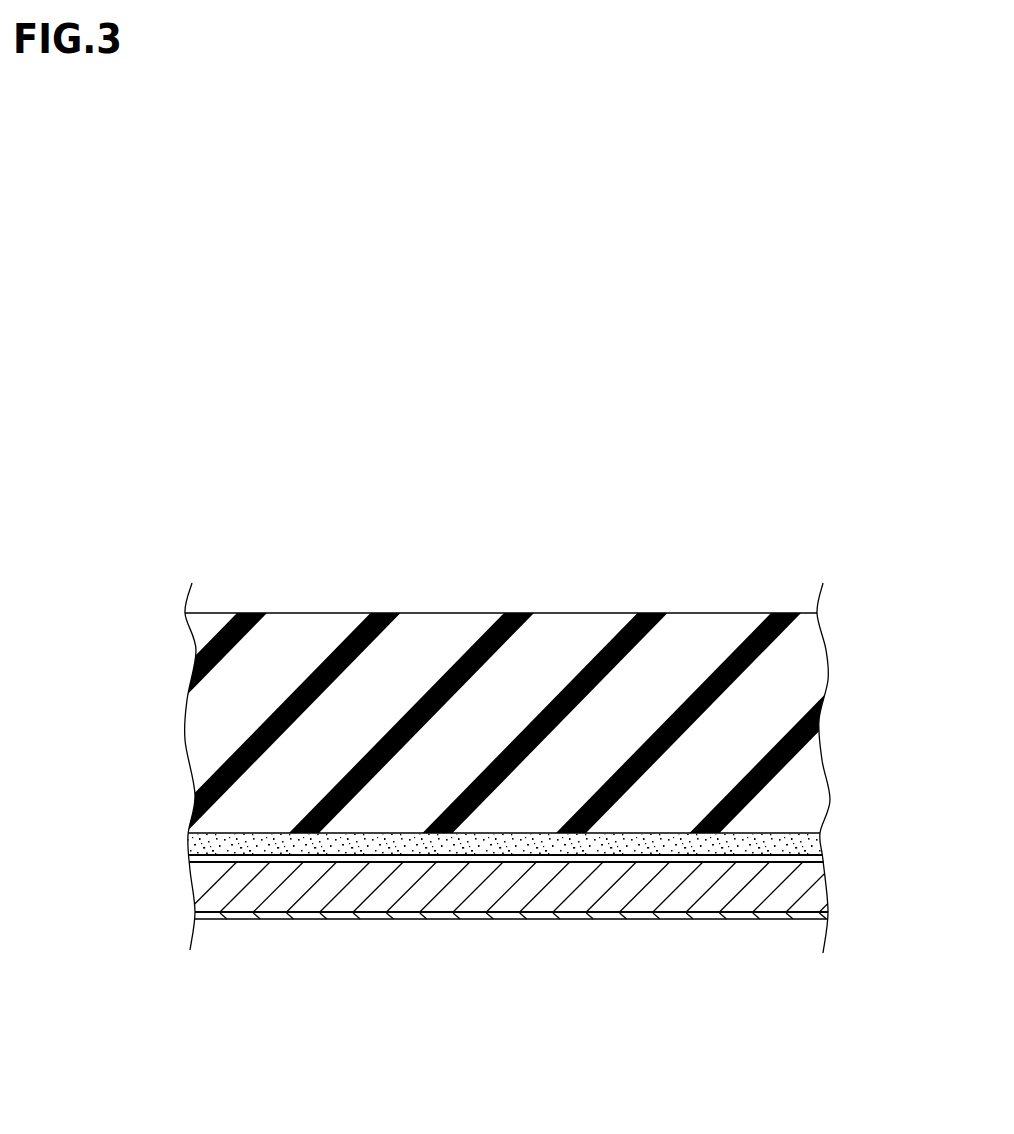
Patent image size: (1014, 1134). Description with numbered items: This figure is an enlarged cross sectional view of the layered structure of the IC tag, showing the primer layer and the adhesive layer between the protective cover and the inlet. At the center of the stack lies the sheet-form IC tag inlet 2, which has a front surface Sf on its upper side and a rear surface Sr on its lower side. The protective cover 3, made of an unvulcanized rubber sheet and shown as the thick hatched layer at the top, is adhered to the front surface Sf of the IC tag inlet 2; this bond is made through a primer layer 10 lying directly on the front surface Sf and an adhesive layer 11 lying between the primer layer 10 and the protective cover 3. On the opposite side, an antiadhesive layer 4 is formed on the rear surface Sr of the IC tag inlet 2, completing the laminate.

The IC tag inlet 2 is at (788, 893).
The protective cover 3 is at (440, 635).
The antiadhesive layer 4 is at (710, 917).
The primer layer 10 is at (790, 860).
The adhesive layer 11 is at (765, 840).
The front surface Sf is at (277, 860).
The rear surface Sr is at (278, 913).